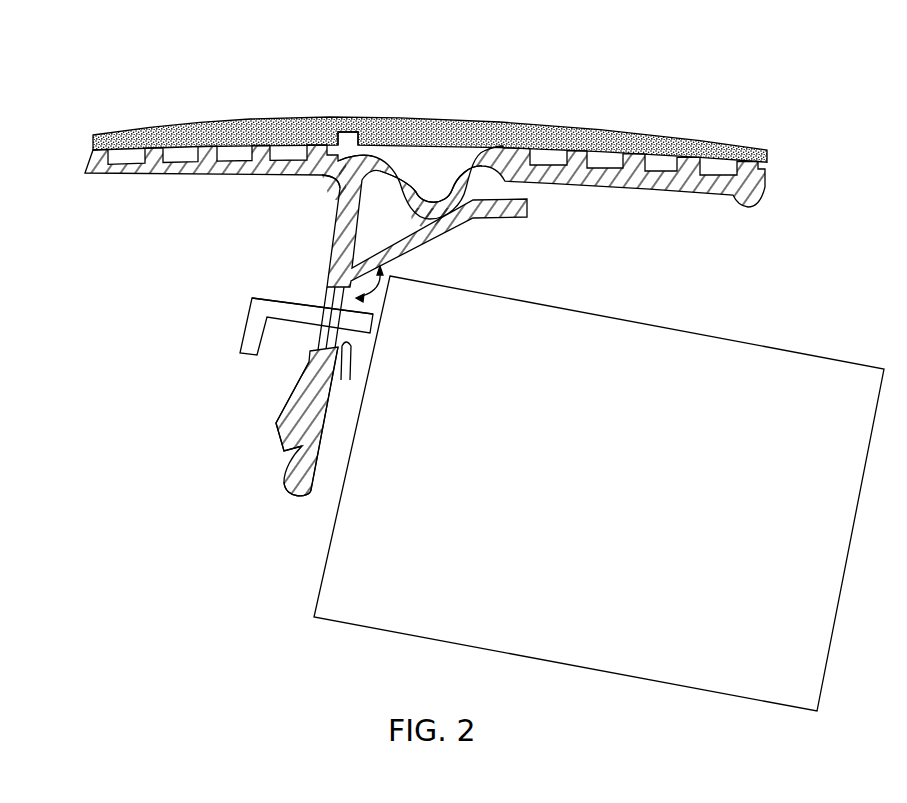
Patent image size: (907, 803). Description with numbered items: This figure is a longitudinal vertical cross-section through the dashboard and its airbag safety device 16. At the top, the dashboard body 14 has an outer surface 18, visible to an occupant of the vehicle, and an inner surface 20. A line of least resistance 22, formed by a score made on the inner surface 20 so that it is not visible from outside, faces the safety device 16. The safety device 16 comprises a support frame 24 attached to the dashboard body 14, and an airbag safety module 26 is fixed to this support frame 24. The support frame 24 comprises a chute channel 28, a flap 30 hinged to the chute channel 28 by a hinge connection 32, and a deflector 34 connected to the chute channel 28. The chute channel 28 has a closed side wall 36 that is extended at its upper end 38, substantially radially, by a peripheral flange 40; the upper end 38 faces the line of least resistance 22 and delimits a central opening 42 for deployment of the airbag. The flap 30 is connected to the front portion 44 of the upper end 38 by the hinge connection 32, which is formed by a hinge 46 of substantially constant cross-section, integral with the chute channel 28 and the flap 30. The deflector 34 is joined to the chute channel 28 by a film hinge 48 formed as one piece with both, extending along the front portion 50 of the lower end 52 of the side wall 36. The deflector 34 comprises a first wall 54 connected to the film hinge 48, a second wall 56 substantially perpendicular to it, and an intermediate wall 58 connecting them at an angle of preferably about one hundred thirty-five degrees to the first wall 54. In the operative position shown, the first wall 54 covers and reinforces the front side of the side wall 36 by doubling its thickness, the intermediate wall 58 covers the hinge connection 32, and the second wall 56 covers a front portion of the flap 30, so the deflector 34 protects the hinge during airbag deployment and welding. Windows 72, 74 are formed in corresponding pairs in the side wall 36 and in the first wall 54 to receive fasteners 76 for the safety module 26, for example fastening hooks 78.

The dashboard body 14 is at (132, 97).
The safety device 16 is at (176, 586).
The outer surface 18 is at (238, 122).
The inner surface 20 is at (465, 150).
The line of least resistance 22 is at (352, 132).
The support frame 24 is at (174, 291).
The airbag safety module 26 is at (607, 490).
The chute channel 28 is at (325, 220).
The flap 30 is at (688, 216).
The hinge connection 32 is at (435, 173).
The deflector 34 is at (466, 240).
The side wall 36 is at (307, 387).
The upper end 38 is at (303, 182).
The peripheral flange 40 is at (158, 168).
The central opening 42 is at (808, 238).
The front portion 44 is at (337, 177).
The hinge 46 is at (397, 170).
The film hinge 48 is at (296, 497).
The front portion 50 is at (242, 418).
The lower end 52 is at (298, 437).
The first wall 54 is at (313, 442).
The second wall 56 is at (527, 208).
The intermediate wall 58 is at (418, 245).
The windows 72 is at (332, 295).
The windows 74 is at (348, 371).
The fasteners 76 is at (229, 329).
The fastening hooks 78 is at (253, 299).